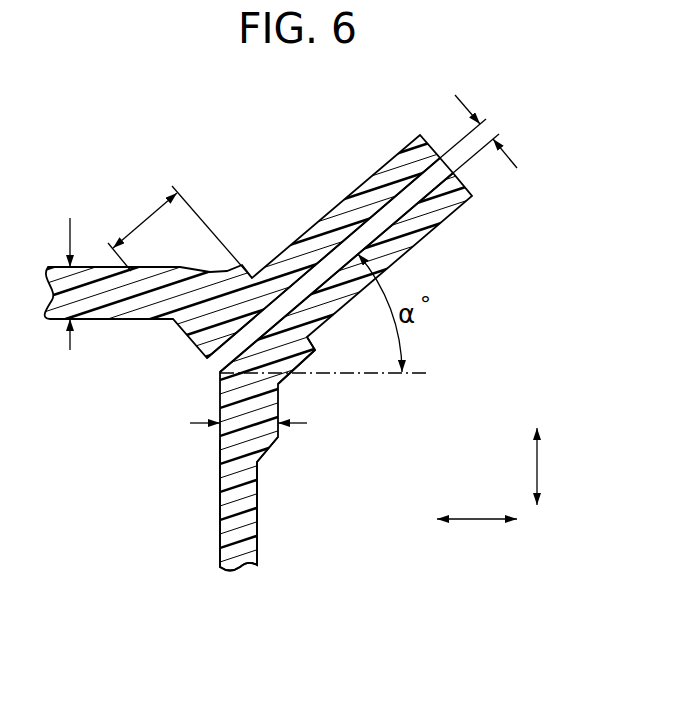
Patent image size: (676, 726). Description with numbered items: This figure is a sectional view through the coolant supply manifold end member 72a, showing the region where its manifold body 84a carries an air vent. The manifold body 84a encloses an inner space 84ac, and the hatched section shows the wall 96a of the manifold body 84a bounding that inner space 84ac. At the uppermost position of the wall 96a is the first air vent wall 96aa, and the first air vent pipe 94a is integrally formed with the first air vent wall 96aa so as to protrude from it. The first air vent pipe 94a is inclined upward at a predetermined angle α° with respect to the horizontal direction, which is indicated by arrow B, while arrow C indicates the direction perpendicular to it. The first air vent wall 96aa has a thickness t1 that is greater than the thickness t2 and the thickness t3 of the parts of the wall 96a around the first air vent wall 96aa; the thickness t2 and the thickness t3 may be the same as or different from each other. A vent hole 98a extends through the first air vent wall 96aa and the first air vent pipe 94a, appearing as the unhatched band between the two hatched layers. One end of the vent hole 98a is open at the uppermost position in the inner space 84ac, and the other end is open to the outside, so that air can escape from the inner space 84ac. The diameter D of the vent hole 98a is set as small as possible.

The coolant supply manifold end member 72a is at (273, 116).
The first air vent pipe 94a is at (423, 230).
The wall 96a is at (132, 308).
The first air vent wall 96aa is at (302, 355).
The vent hole 98a is at (382, 218).
The manifold body 84a is at (277, 533).
The inner space 84ac is at (99, 328).
The thickness of the first air vent wall t1 is at (180, 232).
The thickness of wall part t2 is at (55, 284).
The thickness of wall part t3 is at (239, 411).
The diameter of the vent hole D is at (478, 134).
The arrow B direction B is at (477, 504).
The arrow C direction C is at (548, 466).